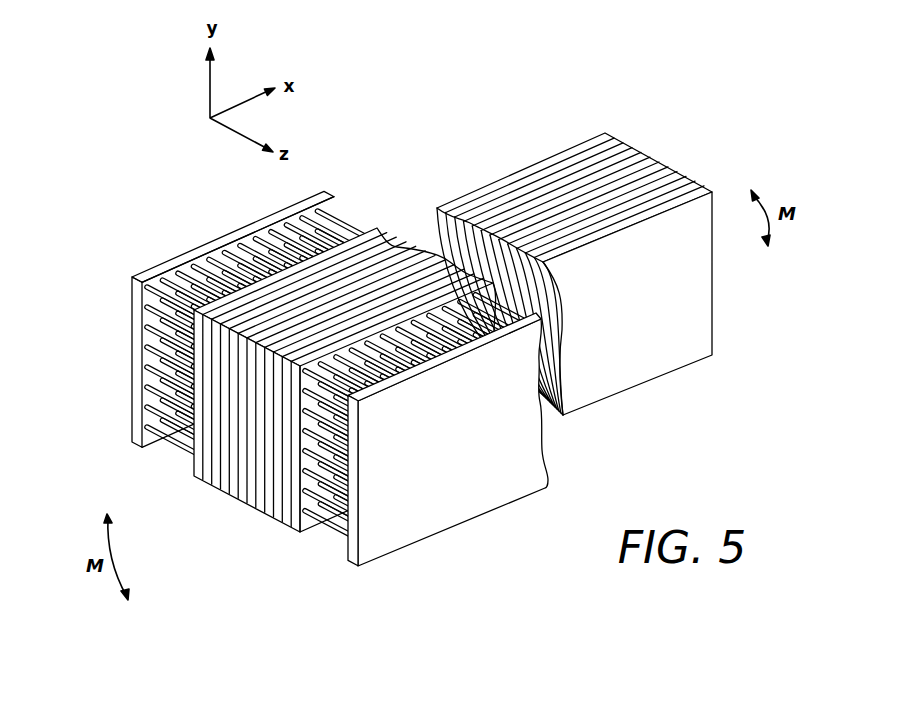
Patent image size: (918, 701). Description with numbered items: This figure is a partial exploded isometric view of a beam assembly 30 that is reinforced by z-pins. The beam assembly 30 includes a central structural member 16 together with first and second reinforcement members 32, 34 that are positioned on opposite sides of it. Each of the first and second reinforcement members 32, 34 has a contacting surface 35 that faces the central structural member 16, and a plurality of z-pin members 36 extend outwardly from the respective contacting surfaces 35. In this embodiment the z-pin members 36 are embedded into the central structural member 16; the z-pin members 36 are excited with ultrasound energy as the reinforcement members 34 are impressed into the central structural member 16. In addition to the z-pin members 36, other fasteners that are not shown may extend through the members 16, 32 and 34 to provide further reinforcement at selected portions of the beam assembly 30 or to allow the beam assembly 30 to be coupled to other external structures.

The beam assembly 30 is at (741, 105).
The central structural member 16 is at (389, 237).
The first reinforcement member 32 is at (456, 524).
The second reinforcement member 34 is at (132, 357).
The contacting surface 35 is at (221, 246).
The z-pin member 36 is at (165, 452).